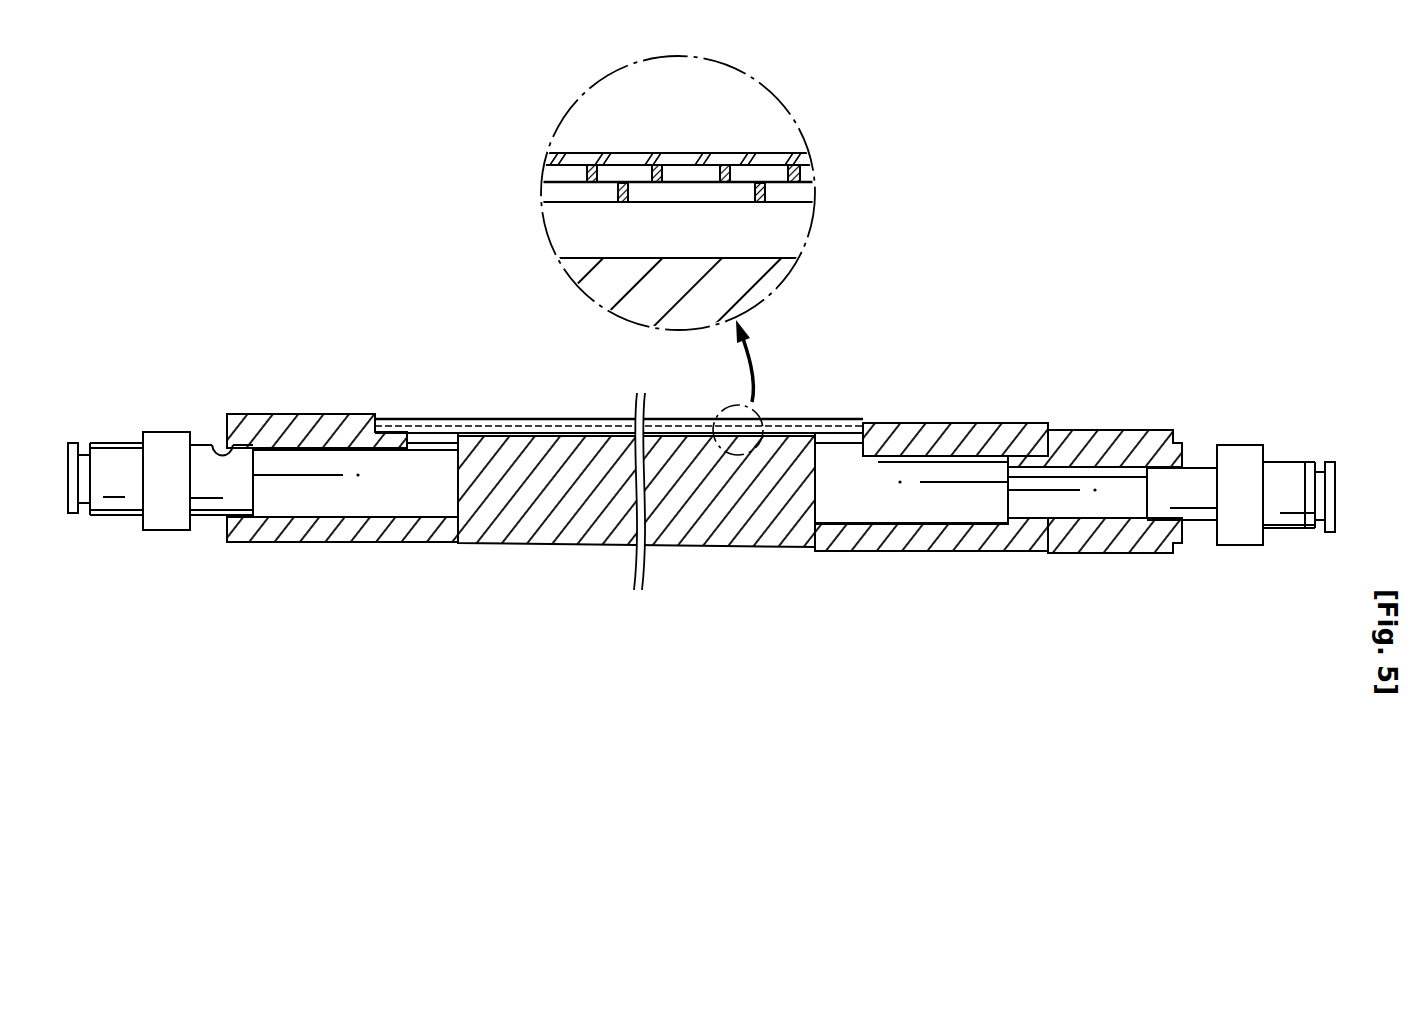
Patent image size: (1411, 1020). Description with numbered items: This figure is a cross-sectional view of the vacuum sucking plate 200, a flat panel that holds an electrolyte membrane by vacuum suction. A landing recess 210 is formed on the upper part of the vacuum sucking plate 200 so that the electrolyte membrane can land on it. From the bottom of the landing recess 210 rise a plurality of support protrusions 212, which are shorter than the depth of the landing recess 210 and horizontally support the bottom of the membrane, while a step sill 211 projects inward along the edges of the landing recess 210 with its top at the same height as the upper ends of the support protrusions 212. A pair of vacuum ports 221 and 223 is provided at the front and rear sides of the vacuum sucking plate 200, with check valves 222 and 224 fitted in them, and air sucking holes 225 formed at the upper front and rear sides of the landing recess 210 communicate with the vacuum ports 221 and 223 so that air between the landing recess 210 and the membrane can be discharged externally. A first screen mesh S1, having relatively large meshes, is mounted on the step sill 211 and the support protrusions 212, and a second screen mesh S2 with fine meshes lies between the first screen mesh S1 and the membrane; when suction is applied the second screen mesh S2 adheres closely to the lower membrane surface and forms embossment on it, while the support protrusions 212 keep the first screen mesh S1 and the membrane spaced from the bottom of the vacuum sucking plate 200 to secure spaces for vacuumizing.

The vacuum sucking plate 200 is at (770, 582).
The landing recess 210 is at (673, 433).
The step sill 211 is at (883, 430).
The support protrusions 212 is at (517, 428).
The vacuum port 221 is at (212, 443).
The check valve 222 is at (120, 457).
The vacuum port 223 is at (1055, 455).
The check valve 224 is at (1240, 460).
The air sucking holes 225 is at (440, 440).
The first screen mesh S1 is at (808, 203).
The second screen mesh S2 is at (808, 172).